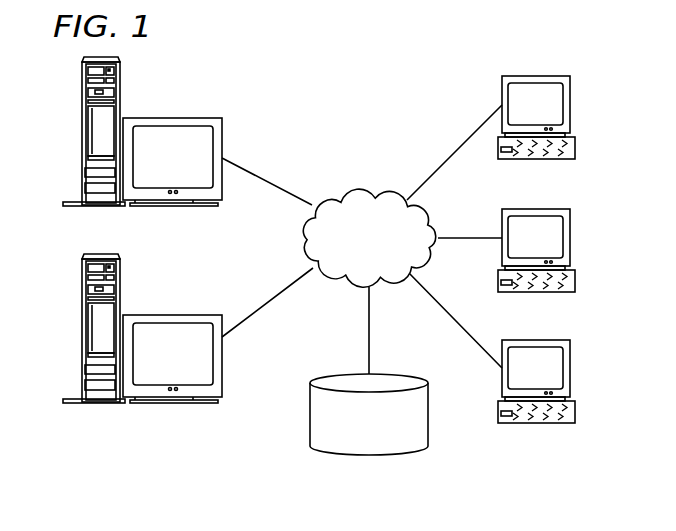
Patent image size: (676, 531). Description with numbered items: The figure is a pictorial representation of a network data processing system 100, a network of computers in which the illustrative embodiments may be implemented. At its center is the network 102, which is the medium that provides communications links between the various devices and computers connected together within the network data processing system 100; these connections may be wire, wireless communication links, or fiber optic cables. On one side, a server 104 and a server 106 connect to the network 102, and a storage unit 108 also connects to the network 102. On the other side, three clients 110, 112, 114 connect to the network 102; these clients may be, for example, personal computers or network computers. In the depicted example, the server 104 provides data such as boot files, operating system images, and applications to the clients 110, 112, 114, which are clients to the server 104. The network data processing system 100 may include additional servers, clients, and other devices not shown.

The network data processing system 100 is at (418, 82).
The network 102 is at (345, 192).
The server 104 is at (72, 130).
The server 106 is at (72, 327).
The storage unit 108 is at (353, 456).
The client 110 is at (570, 103).
The client 112 is at (570, 237).
The client 114 is at (570, 370).